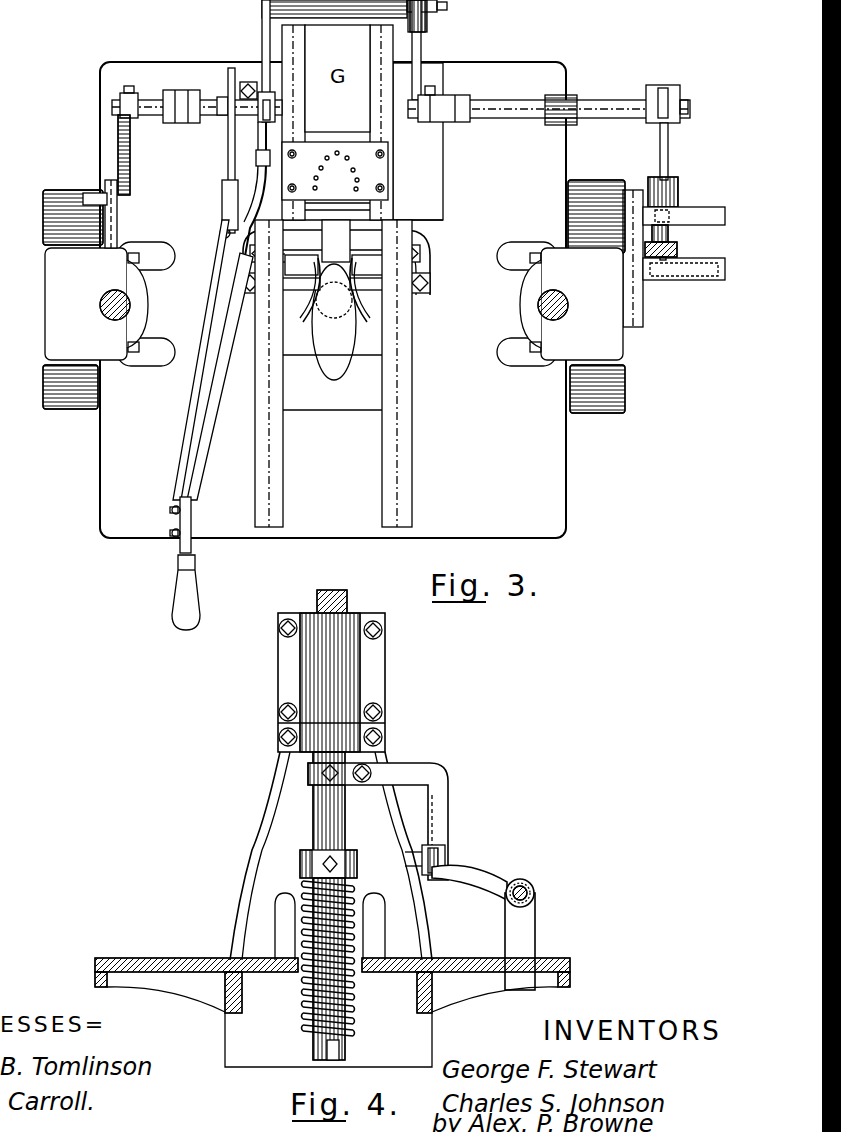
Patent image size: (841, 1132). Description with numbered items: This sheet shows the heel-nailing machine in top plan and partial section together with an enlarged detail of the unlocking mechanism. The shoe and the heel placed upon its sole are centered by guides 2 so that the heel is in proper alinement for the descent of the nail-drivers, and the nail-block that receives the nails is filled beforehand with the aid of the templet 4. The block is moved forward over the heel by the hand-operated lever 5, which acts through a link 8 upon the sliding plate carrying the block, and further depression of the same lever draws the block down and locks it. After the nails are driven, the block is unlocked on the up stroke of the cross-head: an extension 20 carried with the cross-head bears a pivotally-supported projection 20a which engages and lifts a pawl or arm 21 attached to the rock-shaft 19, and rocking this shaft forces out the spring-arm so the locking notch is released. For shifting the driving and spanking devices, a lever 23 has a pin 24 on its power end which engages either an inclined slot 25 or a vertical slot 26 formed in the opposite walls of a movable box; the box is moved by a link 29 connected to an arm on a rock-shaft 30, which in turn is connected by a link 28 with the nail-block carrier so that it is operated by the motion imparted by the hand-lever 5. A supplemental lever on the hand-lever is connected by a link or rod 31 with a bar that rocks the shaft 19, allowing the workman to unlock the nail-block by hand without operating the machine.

In FIG. 3, the guides 2 is at (312, 268).
In FIG. 3, the templet 4 is at (364, 176).
In FIG. 3, the lever 5 is at (220, 376).
In FIG. 3, the link 8 is at (262, 46).
In FIG. 3, the rock-shaft 19 is at (160, 93).
In FIG. 4, the rock-shaft 19 is at (534, 890).
In FIG. 3, the extension 20 is at (114, 219).
In FIG. 4, the extension 20 is at (448, 798).
In FIG. 4, the pivotally-supported projection 20a is at (445, 852).
In FIG. 3, the pawl or arm 21 is at (130, 152).
In FIG. 4, the pawl or arm 21 is at (490, 880).
In FIG. 3, the lever 23 is at (670, 249).
In FIG. 3, the pin 24 is at (668, 258).
In FIG. 3, the inclined slot 25 is at (693, 270).
In FIG. 3, the vertical slot 26 is at (672, 215).
In FIG. 3, the link 28 is at (428, 50).
In FIG. 3, the link 29 is at (668, 152).
In FIG. 3, the rock-shaft 30 is at (518, 100).
In FIG. 3, the link or rod 31 is at (190, 428).